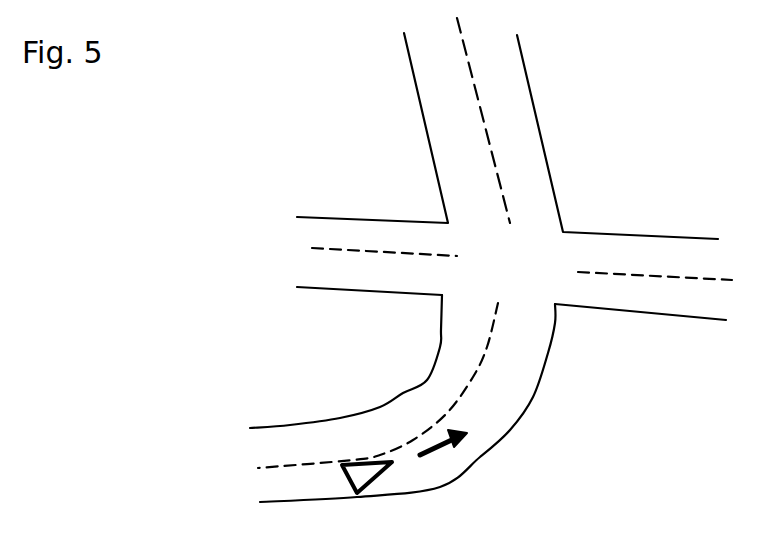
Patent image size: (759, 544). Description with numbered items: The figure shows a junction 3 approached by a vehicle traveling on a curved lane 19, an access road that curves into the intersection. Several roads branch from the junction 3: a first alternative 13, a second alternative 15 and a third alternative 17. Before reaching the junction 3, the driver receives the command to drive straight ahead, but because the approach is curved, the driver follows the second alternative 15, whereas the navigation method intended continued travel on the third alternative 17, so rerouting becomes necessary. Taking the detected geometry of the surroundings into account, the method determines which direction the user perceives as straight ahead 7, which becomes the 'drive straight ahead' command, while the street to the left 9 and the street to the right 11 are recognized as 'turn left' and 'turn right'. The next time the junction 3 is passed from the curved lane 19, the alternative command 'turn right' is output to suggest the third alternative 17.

The junction 3 is at (573, 217).
The straight ahead 7 is at (524, 162).
The street to the left 9 is at (360, 232).
The street to the right 11 is at (632, 255).
The first alternative 13 is at (335, 280).
The second alternative 15 is at (442, 123).
The third alternative 17 is at (608, 290).
The curved lane 19 is at (525, 433).